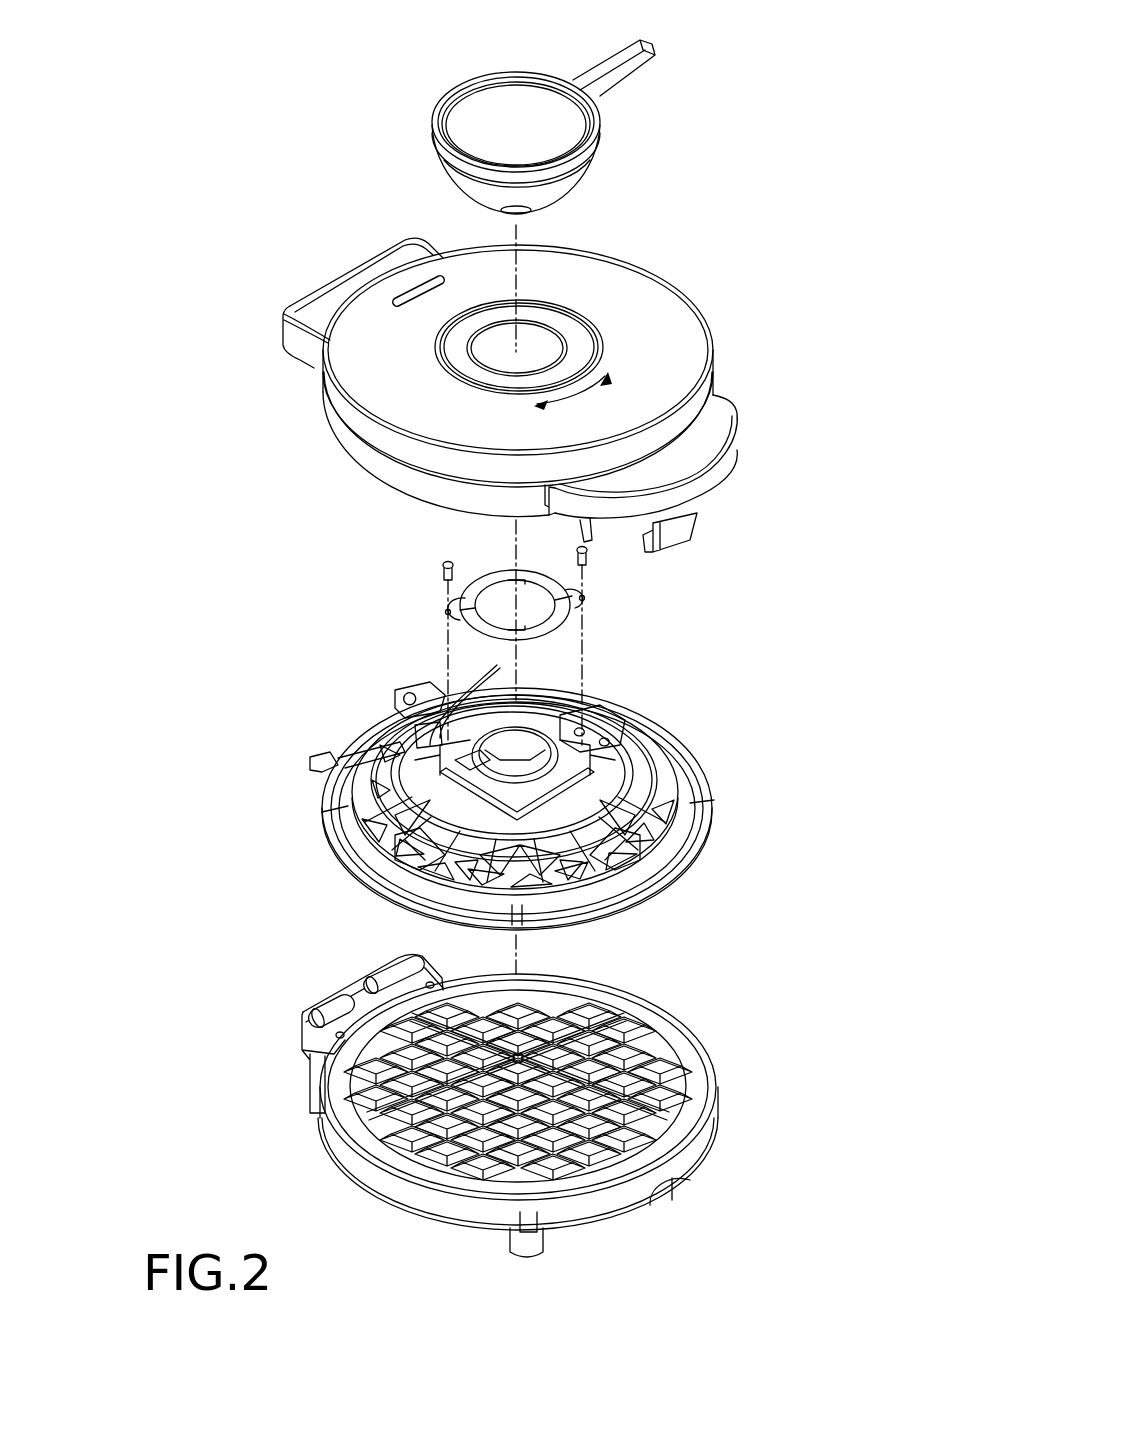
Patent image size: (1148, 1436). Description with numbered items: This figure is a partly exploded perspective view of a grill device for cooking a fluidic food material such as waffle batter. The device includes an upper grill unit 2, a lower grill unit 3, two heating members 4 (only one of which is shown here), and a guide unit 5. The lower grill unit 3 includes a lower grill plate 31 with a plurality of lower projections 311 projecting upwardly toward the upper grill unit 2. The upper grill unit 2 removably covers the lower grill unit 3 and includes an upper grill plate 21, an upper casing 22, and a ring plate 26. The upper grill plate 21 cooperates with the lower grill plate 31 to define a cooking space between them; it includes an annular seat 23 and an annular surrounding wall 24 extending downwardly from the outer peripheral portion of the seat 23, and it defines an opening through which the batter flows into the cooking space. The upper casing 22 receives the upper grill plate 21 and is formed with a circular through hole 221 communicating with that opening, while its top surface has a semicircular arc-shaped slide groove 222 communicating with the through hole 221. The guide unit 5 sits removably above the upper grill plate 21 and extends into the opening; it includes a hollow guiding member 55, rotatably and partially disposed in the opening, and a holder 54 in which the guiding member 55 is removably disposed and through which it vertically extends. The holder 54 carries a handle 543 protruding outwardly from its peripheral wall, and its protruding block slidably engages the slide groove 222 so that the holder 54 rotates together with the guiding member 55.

The upper grill unit 2 is at (558, 582).
The upper grill plate 21 is at (537, 789).
The upper casing 22 is at (515, 393).
The through hole 221 is at (548, 318).
The slide groove 222 is at (467, 328).
The annular seat 23 is at (650, 790).
The annular surrounding wall 24 is at (680, 872).
The ring plate 26 is at (570, 612).
The lower grill unit 3 is at (512, 1088).
The lower grill plate 31 is at (638, 1043).
The lower projections 311 is at (592, 1152).
The heating member 4 is at (396, 755).
The guide unit 5 is at (567, 107).
The holder 54 is at (575, 178).
The handle 543 is at (630, 55).
The guiding member 55 is at (505, 108).